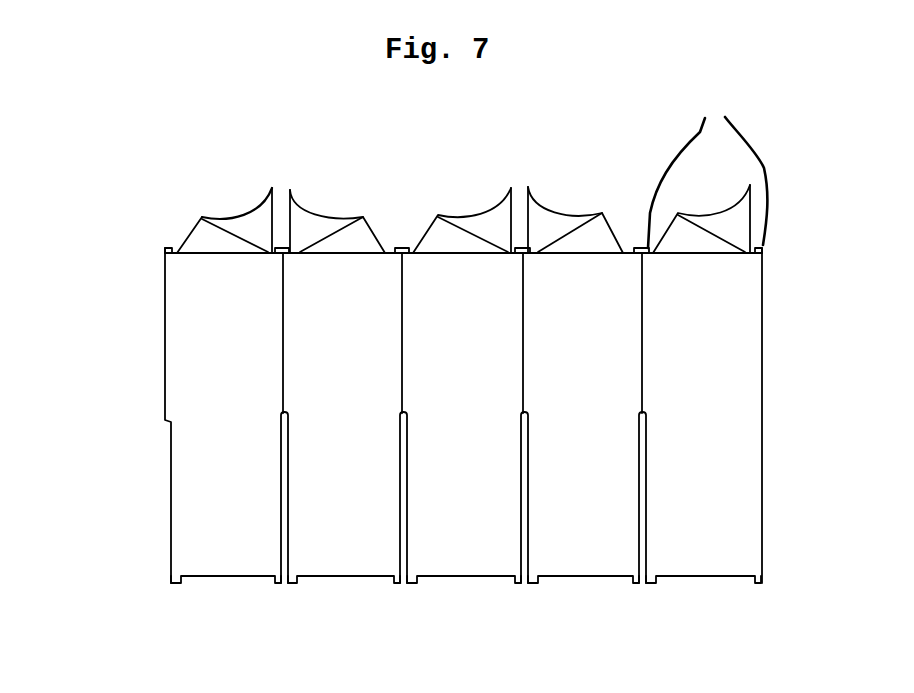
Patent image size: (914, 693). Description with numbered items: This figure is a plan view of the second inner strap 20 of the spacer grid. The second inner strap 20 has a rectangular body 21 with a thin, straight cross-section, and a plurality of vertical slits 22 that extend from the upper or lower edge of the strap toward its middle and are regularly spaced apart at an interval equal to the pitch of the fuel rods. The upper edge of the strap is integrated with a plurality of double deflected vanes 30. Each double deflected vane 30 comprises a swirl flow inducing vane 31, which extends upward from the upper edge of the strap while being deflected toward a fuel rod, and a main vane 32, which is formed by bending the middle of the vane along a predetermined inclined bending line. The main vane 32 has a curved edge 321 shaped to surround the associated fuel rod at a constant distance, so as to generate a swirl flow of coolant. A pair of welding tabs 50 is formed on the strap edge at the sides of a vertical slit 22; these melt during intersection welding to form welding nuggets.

The second inner strap 20 is at (777, 238).
The rectangular body 21 is at (185, 392).
The vertical slit 22 is at (290, 550).
The double deflected vane 30 is at (455, 202).
The swirl flow inducing vane 31 is at (190, 191).
The main vane 32 is at (560, 223).
The curved edge 321 is at (248, 217).
The welding tab 50 is at (707, 164).